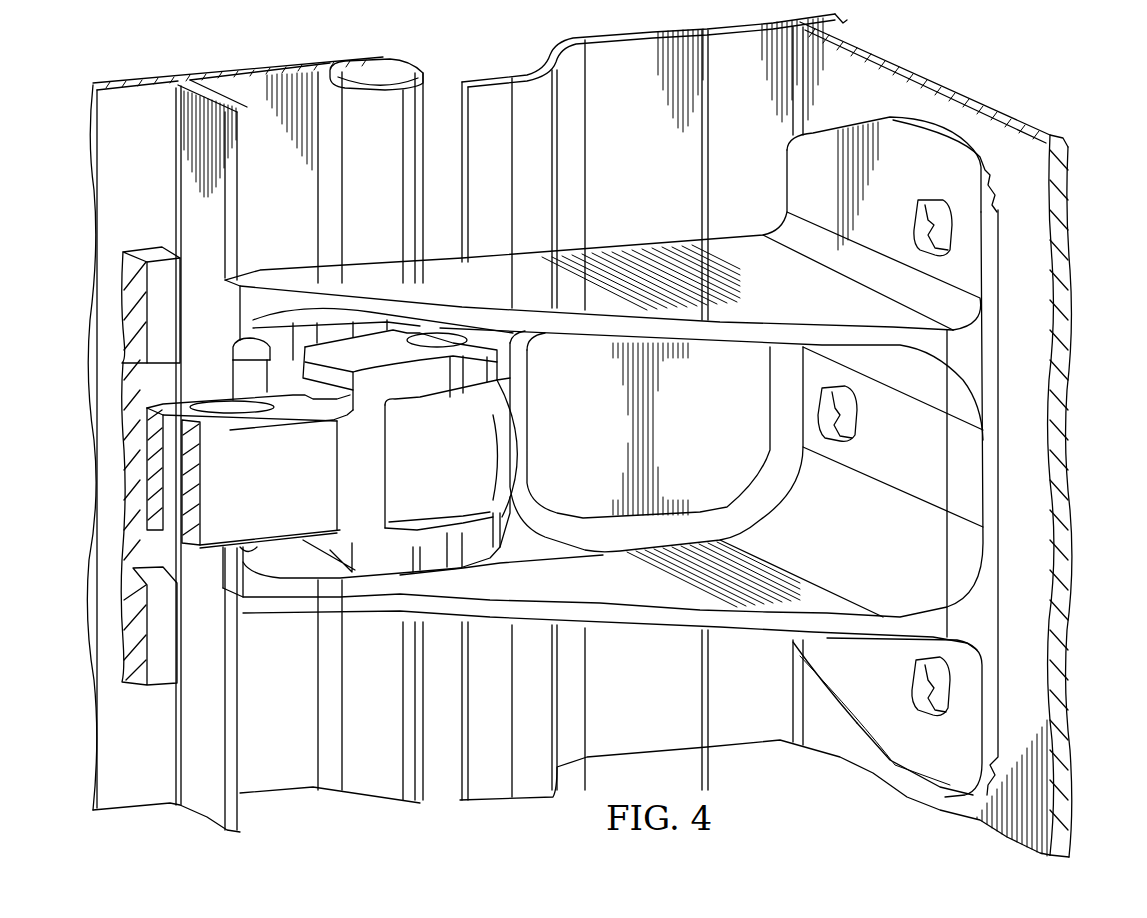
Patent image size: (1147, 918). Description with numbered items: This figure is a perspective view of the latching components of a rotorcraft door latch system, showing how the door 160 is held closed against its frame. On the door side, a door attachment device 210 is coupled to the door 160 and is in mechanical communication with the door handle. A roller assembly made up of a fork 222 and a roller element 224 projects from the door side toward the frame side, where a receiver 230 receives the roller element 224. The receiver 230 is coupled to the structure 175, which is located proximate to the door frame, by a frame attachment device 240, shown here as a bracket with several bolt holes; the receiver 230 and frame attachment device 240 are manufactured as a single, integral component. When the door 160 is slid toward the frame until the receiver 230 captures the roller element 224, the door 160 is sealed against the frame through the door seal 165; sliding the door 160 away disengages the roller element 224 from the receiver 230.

The door 160 is at (203, 810).
The door seal 165 is at (367, 703).
The structure 175 is at (1033, 277).
The door attachment device 210 is at (152, 250).
The fork 222 is at (270, 517).
The roller element 224 is at (517, 443).
The receiver 230 is at (686, 262).
The frame attachment device 240 is at (913, 213).